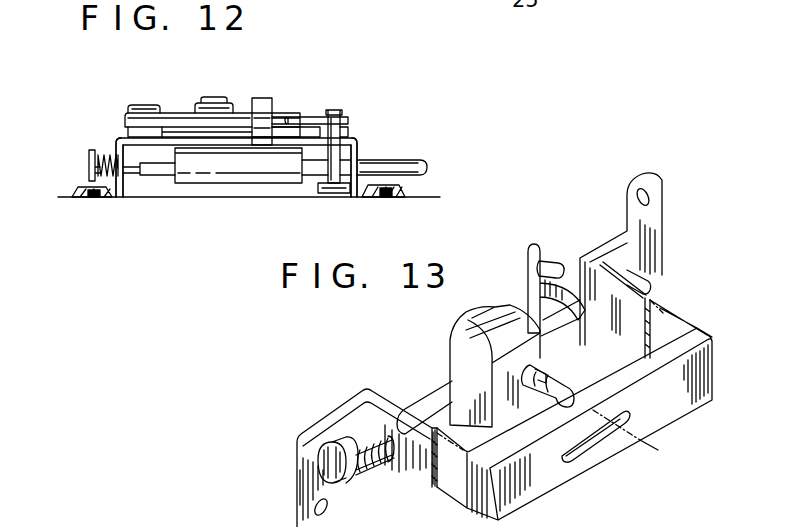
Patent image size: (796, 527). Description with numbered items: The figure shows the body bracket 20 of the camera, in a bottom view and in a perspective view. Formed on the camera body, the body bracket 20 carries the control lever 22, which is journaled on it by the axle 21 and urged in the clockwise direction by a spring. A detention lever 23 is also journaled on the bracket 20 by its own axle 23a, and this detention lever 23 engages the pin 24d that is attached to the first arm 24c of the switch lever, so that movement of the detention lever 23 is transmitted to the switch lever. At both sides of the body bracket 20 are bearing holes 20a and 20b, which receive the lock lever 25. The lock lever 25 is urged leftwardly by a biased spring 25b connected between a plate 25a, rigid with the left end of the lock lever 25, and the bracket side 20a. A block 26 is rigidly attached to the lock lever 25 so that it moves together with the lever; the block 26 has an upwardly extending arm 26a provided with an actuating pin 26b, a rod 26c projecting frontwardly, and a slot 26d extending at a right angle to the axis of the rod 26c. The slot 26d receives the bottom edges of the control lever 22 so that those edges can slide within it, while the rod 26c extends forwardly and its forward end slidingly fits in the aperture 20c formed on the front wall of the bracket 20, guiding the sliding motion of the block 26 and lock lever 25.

In FIG. 12, the body bracket 20 is at (235, 137).
In FIG. 13, the body bracket 20 is at (440, 424).
In FIG. 12, the bearing hole 20a is at (124, 168).
In FIG. 13, the bearing hole 20a is at (397, 423).
In FIG. 12, the bearing hole 20b is at (355, 190).
In FIG. 13, the bearing hole 20b is at (580, 260).
In FIG. 13, the aperture 20c is at (590, 446).
In FIG. 12, the axle 21 is at (142, 105).
In FIG. 12, the control lever 22 is at (172, 113).
In FIG. 12, the detention lever 23 is at (308, 117).
In FIG. 12, the axle 23a is at (342, 130).
In FIG. 12, the first arm of switch lever 24c is at (322, 193).
In FIG. 12, the pin 24d is at (330, 170).
In FIG. 12, the lock lever 25 is at (142, 174).
In FIG. 13, the lock lever 25 is at (427, 402).
In FIG. 12, the plate 25a is at (92, 166).
In FIG. 13, the plate 25a is at (340, 484).
In FIG. 12, the biased spring 25b is at (104, 155).
In FIG. 13, the biased spring 25b is at (373, 460).
In FIG. 12, the block 26 is at (210, 177).
In FIG. 13, the block 26 is at (480, 331).
In FIG. 13, the upwardly extending arm 26a is at (528, 270).
In FIG. 13, the actuating pin 26b is at (556, 262).
In FIG. 12, the rod 26c is at (264, 104).
In FIG. 13, the rod 26c is at (555, 395).
In FIG. 13, the slot 26d is at (557, 372).